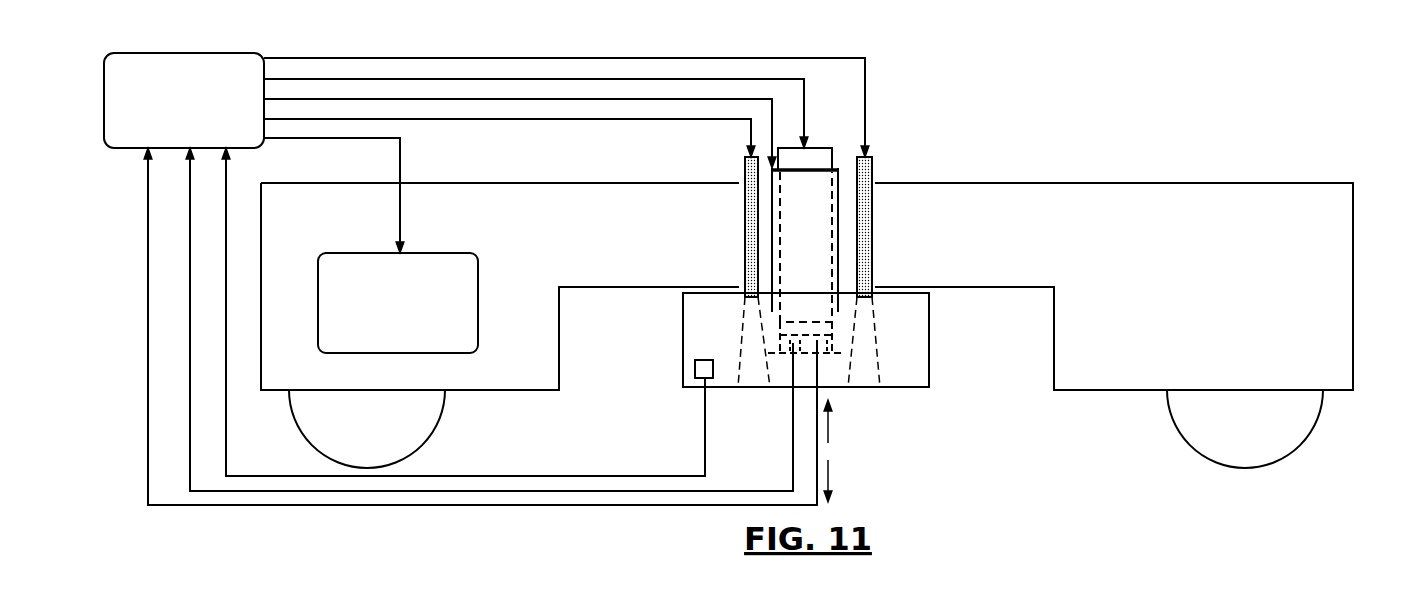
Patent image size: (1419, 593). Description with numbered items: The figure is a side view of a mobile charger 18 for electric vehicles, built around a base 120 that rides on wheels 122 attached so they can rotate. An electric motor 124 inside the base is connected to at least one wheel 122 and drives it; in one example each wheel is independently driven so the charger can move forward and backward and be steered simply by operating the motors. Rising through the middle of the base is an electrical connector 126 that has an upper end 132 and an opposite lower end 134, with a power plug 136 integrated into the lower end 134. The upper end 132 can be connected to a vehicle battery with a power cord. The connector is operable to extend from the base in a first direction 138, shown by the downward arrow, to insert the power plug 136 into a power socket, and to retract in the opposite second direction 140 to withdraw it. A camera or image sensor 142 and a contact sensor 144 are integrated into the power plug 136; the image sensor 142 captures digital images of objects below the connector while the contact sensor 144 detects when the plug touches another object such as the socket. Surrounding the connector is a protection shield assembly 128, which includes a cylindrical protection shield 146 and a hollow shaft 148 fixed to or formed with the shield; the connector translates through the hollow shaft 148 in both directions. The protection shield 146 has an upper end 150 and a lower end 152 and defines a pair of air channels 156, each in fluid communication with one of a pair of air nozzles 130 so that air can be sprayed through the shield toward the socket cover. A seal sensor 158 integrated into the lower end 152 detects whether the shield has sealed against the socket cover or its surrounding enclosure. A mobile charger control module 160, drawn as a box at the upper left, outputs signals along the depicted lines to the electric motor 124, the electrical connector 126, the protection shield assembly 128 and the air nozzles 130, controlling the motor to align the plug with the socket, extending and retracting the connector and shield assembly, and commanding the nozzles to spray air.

The mobile charger 18 is at (1257, 84).
The base 120 is at (1322, 237).
The wheels 122 is at (415, 425).
The electric motor 124 is at (367, 253).
The electrical connector 126 is at (817, 146).
The protection shield assembly 128 is at (940, 318).
The air nozzles 130 is at (743, 228).
The upper end 132 is at (806, 145).
The lower end 134 is at (822, 358).
The power plug 136 is at (788, 320).
The first direction 138 is at (828, 475).
The second direction 140 is at (828, 420).
The image sensor 142 is at (770, 340).
The contact sensor 144 is at (836, 340).
The protection shield 146 is at (697, 338).
The hollow shaft 148 is at (839, 187).
The upper end 150 is at (705, 288).
The lower end 152 is at (712, 390).
The air channels 156 is at (757, 385).
The seal sensor 158 is at (693, 381).
The mobile charger control module 160 is at (104, 82).